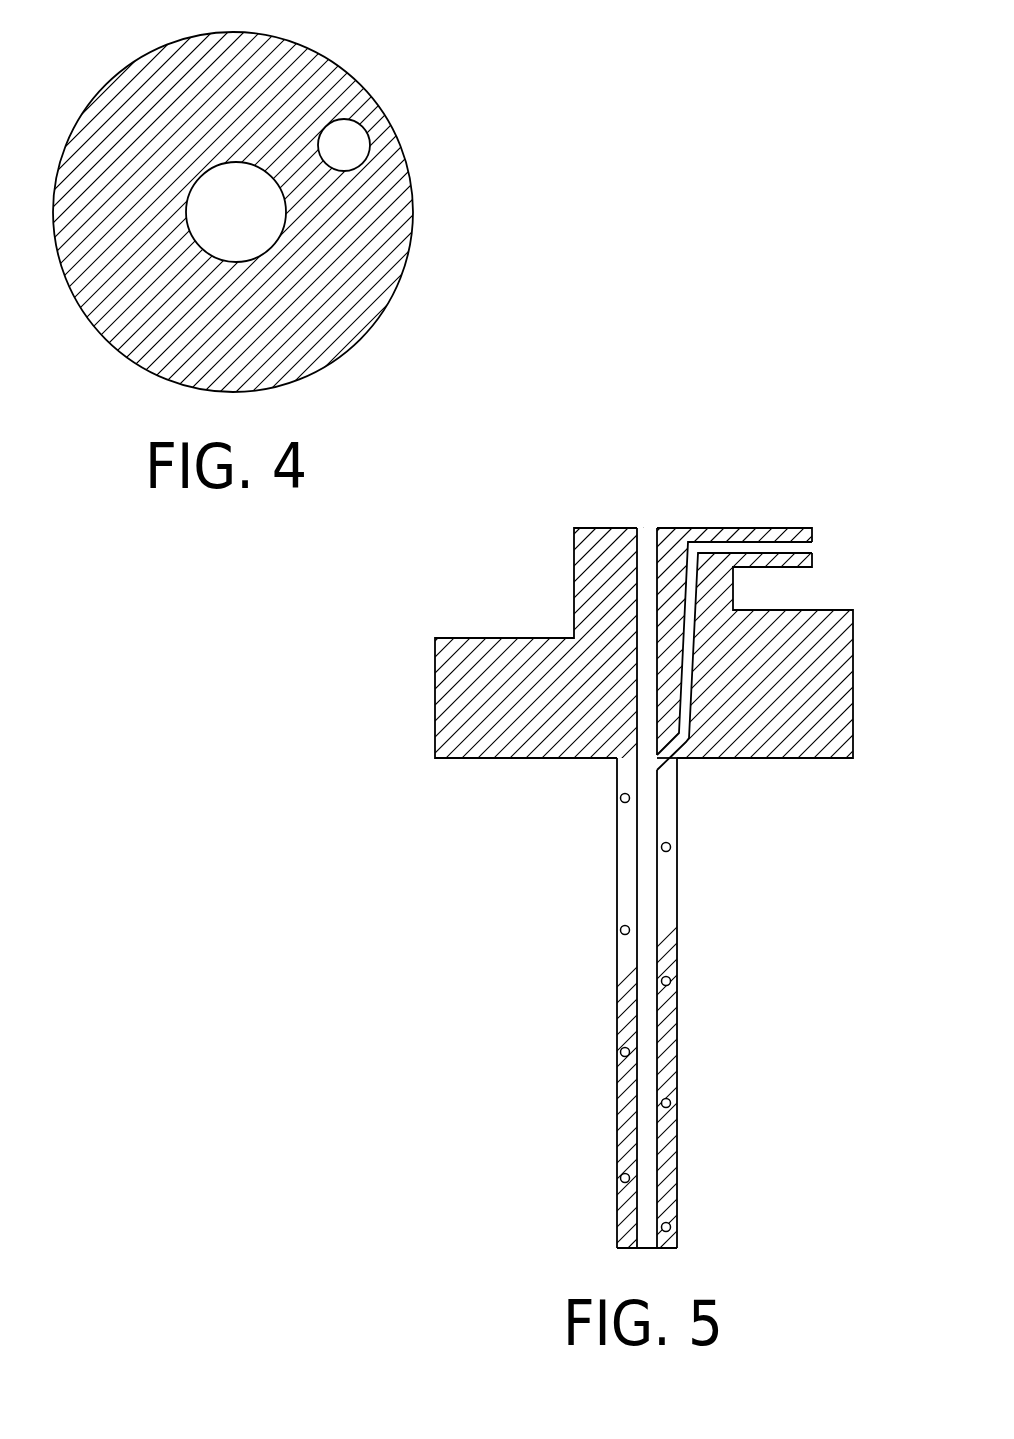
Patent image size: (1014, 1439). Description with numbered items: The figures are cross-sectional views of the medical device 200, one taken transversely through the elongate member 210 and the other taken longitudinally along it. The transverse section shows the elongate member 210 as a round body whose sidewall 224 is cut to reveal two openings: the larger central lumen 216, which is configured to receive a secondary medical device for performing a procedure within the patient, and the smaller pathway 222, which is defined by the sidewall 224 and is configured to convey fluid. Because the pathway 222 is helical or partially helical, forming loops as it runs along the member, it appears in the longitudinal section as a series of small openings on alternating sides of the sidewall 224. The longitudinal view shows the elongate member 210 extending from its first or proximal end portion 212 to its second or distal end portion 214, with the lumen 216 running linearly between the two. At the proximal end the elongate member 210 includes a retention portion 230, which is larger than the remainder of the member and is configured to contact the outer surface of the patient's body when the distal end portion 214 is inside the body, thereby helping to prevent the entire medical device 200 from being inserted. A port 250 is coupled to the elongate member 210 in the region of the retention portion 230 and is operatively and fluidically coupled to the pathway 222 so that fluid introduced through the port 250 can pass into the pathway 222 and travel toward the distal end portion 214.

In FIG. 5, the medical device 200 is at (624, 864).
In FIG. 4, the elongate member 210 is at (246, 196).
In FIG. 5, the elongate member 210 is at (644, 898).
In FIG. 5, the first or proximal end portion 212 is at (668, 782).
In FIG. 5, the second or distal end portion 214 is at (677, 1238).
In FIG. 4, the lumen 216 is at (270, 230).
In FIG. 5, the lumen 216 is at (650, 889).
In FIG. 4, the pathway 222 is at (362, 137).
In FIG. 5, the pathway 222 is at (620, 805).
In FIG. 4, the sidewall 224 is at (312, 48).
In FIG. 5, the retention portion 230 is at (835, 653).
In FIG. 5, the port 250 is at (753, 532).